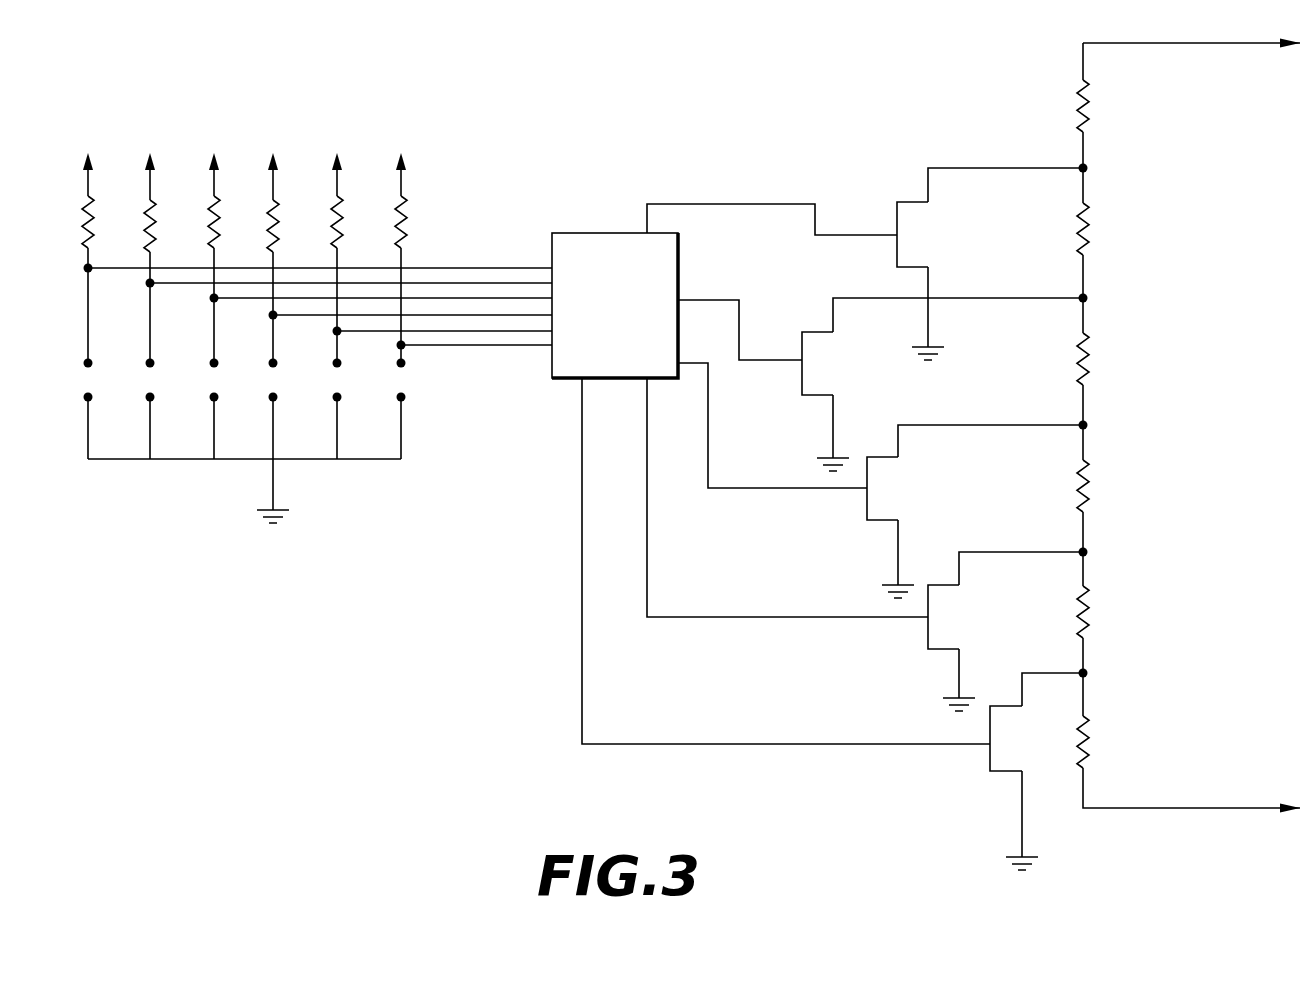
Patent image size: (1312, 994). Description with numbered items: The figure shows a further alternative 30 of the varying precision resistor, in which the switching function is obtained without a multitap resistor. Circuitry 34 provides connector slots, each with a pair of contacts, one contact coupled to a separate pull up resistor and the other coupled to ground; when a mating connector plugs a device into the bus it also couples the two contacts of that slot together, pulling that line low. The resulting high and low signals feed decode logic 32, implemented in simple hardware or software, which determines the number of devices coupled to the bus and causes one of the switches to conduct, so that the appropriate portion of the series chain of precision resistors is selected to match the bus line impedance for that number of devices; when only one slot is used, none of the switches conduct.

The further alternative 30 is at (534, 156).
The decode logic 32 is at (554, 379).
The circuitry 34 is at (137, 460).